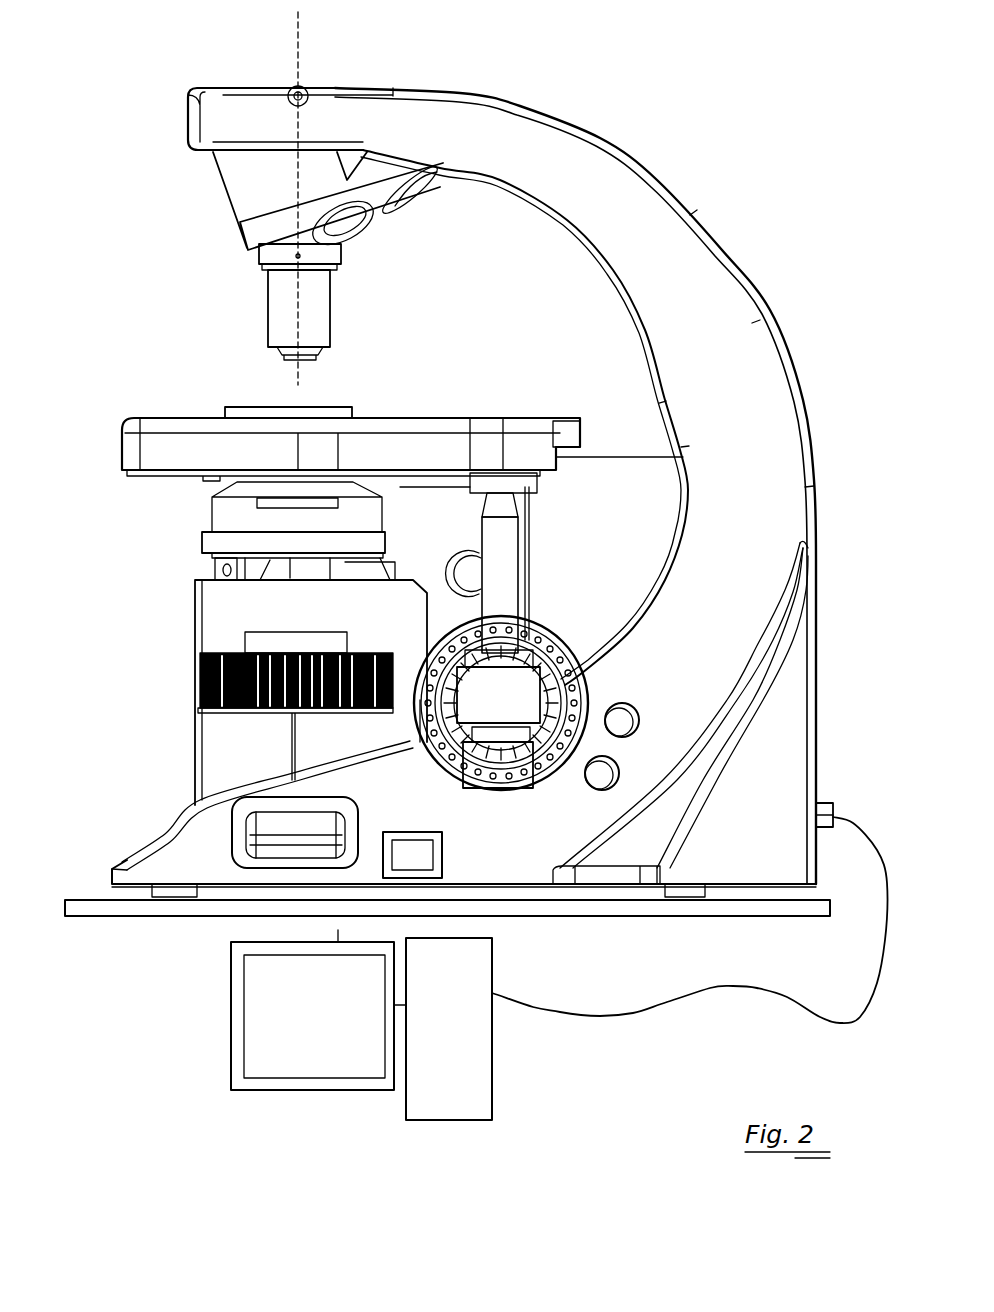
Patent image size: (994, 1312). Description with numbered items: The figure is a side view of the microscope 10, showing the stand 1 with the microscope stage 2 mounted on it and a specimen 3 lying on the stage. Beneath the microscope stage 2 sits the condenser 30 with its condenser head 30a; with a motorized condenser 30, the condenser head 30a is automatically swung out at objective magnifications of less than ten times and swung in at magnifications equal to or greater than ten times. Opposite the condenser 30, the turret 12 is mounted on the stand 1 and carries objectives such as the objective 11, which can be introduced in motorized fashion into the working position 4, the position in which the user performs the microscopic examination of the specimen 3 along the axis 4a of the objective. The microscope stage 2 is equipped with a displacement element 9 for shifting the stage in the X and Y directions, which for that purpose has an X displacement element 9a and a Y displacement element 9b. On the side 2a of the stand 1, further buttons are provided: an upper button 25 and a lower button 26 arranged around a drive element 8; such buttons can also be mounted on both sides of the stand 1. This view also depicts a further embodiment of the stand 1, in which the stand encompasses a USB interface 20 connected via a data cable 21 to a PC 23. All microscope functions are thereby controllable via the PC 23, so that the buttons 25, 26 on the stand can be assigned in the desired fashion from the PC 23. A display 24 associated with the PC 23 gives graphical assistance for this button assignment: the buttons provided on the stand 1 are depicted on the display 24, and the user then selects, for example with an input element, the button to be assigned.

The stand 1 is at (447, 501).
The microscope stage 2 is at (382, 426).
The side of stand 2a is at (717, 380).
The specimen 3 is at (262, 413).
The working position 4 is at (268, 308).
The optical axis 4a is at (300, 67).
The drive element 8 is at (491, 708).
The displacement element 9 is at (512, 553).
The X displacement element 9a is at (433, 740).
The Y displacement element 9b is at (487, 778).
The microscope 10 is at (476, 566).
The objective 11 is at (299, 302).
The turret 12 is at (253, 230).
The USB interface 20 is at (827, 802).
The data cable 21 is at (730, 985).
The PC 23 is at (465, 1034).
The display 24 is at (327, 1022).
The upper button 25 is at (620, 718).
The lower button 26 is at (600, 773).
The condenser 30 is at (269, 643).
The condenser head 30a is at (223, 523).